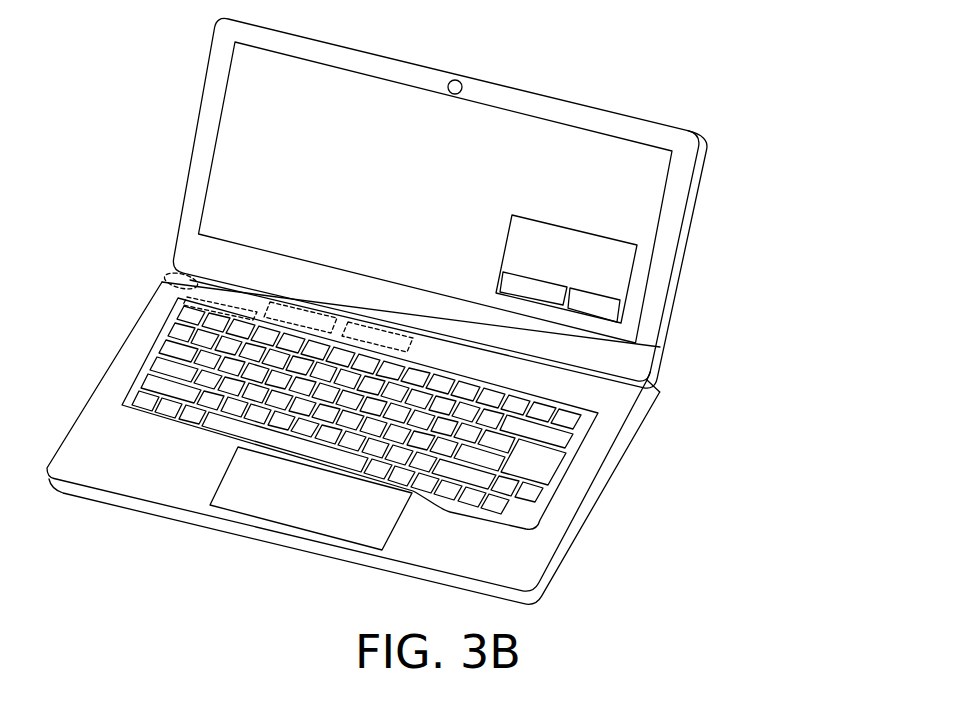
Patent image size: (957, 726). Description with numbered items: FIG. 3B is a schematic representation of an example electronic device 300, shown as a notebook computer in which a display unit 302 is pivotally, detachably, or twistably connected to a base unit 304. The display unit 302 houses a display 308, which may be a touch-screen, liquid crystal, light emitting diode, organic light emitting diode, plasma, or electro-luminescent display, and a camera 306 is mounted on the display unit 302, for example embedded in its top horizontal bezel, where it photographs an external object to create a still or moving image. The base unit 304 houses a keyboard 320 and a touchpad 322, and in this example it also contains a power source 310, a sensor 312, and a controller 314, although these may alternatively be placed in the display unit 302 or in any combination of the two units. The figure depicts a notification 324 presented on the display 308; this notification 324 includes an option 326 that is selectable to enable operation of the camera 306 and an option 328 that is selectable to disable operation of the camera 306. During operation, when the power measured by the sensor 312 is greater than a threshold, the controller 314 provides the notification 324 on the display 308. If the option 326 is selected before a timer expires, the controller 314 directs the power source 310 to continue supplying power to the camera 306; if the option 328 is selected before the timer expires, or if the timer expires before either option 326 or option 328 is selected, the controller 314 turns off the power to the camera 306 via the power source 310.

The electronic device 300 is at (603, 597).
The display unit 302 is at (690, 227).
The base unit 304 is at (616, 471).
The camera 306 is at (461, 83).
The display 308 is at (663, 199).
The power source 310 is at (172, 284).
The sensor 312 is at (640, 354).
The controller 314 is at (645, 386).
The keyboard 320 is at (559, 488).
The touchpad 322 is at (398, 522).
The notification 324 is at (425, 240).
The option to enable camera 326 is at (503, 284).
The option to disable camera 328 is at (621, 306).